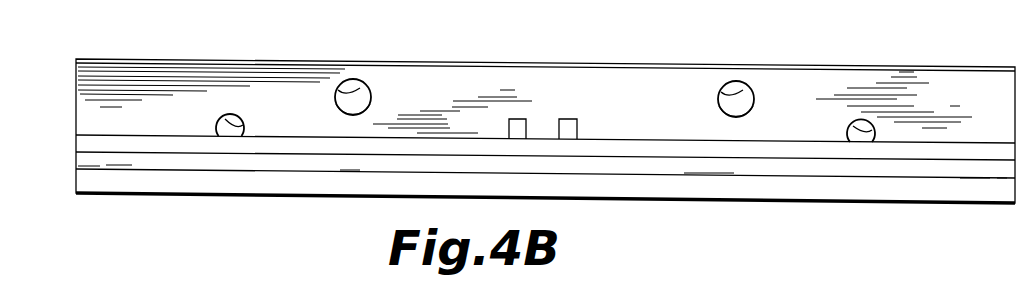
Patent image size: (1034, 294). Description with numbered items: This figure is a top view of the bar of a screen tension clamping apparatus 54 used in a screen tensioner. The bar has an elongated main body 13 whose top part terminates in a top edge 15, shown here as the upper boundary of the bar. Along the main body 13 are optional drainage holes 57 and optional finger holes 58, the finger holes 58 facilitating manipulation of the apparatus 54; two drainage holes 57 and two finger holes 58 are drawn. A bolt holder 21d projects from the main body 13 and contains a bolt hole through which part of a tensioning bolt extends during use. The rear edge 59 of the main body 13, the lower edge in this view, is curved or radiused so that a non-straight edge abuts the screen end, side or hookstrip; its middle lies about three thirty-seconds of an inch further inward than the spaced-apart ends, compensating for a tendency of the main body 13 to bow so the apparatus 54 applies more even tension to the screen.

The screen tension clamping apparatus 54 is at (192, 58).
The drainage hole 57 is at (223, 118).
The finger hole 58 is at (360, 86).
The bolt holder 21d is at (517, 119).
The main body 13 is at (659, 145).
The top edge 15 is at (131, 163).
The rear edge 59 is at (226, 193).